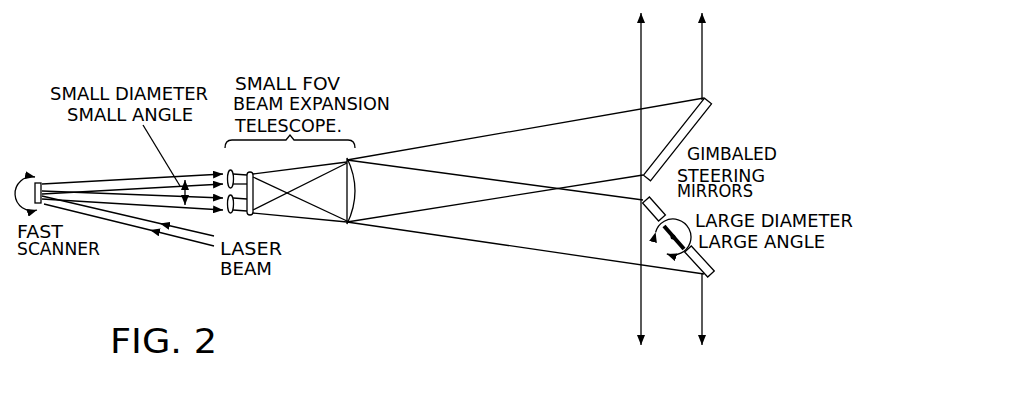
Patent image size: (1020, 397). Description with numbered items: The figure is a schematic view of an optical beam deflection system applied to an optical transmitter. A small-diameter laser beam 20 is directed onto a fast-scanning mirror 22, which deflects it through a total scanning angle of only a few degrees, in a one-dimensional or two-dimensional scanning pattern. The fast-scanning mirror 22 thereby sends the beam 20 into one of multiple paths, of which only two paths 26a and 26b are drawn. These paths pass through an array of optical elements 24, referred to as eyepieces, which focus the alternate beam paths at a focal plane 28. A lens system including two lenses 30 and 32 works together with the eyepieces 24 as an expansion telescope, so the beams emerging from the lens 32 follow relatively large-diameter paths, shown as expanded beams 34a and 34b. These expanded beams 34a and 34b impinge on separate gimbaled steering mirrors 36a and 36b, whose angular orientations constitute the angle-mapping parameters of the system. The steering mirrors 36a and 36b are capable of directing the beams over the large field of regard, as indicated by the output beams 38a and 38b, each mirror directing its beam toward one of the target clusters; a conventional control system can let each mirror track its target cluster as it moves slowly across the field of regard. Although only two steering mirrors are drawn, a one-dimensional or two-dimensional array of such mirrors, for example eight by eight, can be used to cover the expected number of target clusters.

The laser beam 20 is at (201, 244).
The fast-scanning mirror 22 is at (43, 178).
The optical elements (eyepieces) 24 is at (232, 170).
The beam path 26a is at (140, 182).
The beam path 26b is at (148, 203).
The focal plane 28 is at (249, 170).
The lens 30 is at (256, 195).
The lens 32 is at (359, 208).
The expanded beam path 34a is at (521, 148).
The expanded beam path 34b is at (522, 230).
The gimbaled steering mirror 36a is at (703, 122).
The gimbaled steering mirror 36b is at (708, 262).
The output beam 38a is at (678, 57).
The output beam 38b is at (688, 313).